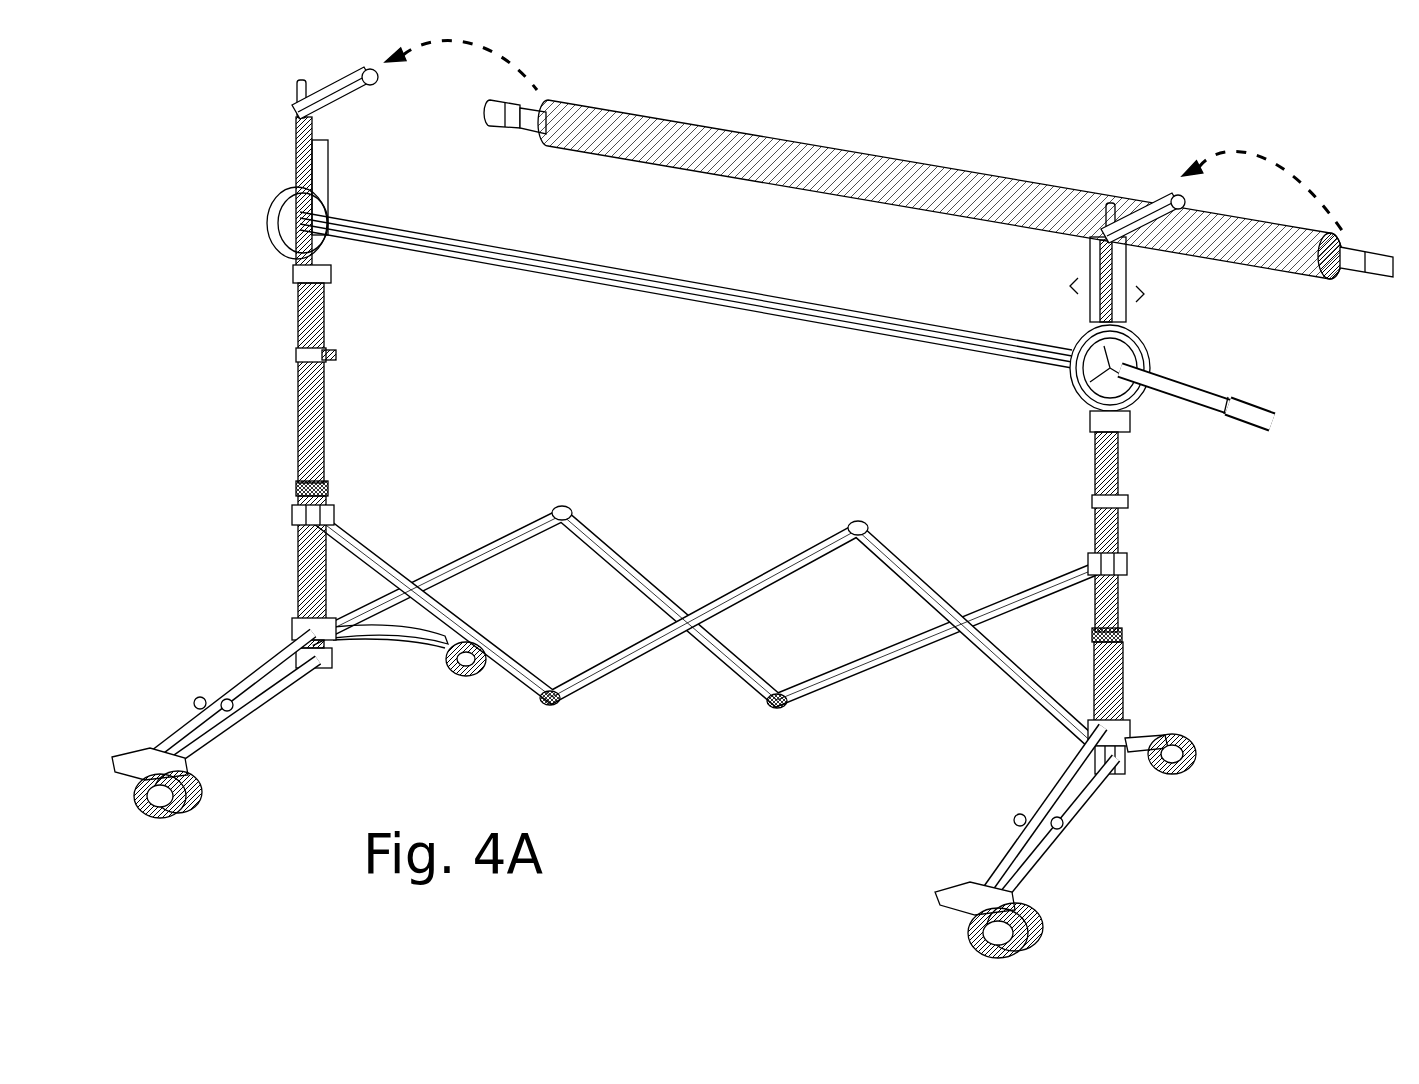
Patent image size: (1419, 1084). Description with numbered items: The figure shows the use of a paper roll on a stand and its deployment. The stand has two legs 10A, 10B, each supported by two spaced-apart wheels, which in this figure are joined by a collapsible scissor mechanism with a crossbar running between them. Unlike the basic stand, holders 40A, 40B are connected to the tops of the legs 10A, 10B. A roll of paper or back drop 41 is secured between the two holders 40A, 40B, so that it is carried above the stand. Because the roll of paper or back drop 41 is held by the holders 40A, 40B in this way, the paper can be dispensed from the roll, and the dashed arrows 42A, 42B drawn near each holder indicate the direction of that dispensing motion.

The leg 10A is at (299, 467).
The leg 10B is at (1103, 580).
The holder 40A is at (382, 142).
The holder 40B is at (1157, 228).
The roll of paper or back drop 41 is at (938, 170).
The arrow 42A is at (483, 63).
The arrow 42B is at (1262, 177).